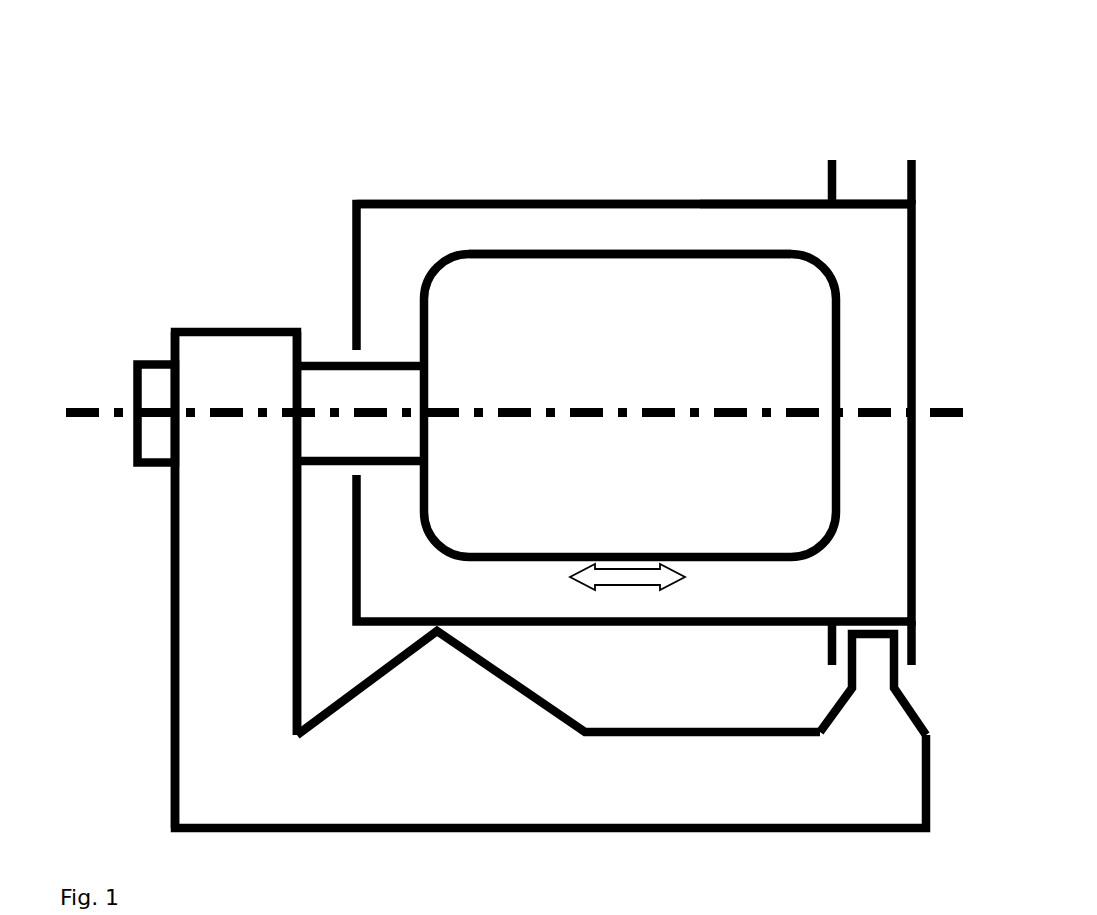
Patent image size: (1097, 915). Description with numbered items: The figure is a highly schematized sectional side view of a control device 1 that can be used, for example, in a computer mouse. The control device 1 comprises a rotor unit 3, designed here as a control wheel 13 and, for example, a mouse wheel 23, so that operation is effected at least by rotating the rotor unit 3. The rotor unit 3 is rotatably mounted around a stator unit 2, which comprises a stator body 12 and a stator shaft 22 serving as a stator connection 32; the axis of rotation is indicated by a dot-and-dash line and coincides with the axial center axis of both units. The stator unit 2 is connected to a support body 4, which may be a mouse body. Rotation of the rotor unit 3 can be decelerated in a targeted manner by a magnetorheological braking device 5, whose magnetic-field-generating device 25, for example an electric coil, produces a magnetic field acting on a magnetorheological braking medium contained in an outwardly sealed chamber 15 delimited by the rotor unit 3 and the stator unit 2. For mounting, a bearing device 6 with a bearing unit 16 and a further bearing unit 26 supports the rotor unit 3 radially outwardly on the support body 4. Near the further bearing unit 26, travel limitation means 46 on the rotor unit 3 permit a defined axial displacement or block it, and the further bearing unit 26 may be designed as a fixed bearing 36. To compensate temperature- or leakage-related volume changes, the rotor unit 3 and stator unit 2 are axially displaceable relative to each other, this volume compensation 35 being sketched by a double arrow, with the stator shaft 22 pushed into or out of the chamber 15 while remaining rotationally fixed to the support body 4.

The control device 1 is at (120, 62).
The stator unit 2 is at (539, 310).
The rotor unit 3 is at (578, 200).
The support body 4 is at (172, 722).
The braking device 5 is at (703, 225).
The bearing device 6 is at (322, 664).
The stator body 12 is at (512, 250).
The control wheel 13 is at (634, 156).
The mouse wheel 23 is at (655, 200).
The chamber 15 is at (786, 238).
The bearing unit 16 is at (434, 642).
The stator shaft 22 is at (332, 362).
The magnetic-field-generating device 25 is at (714, 280).
The further bearing unit 26 is at (868, 642).
The stator connection 32 is at (317, 355).
The volume compensation 35 is at (633, 583).
The fixed bearing 36 is at (819, 751).
The travel limitation means 46 is at (826, 645).